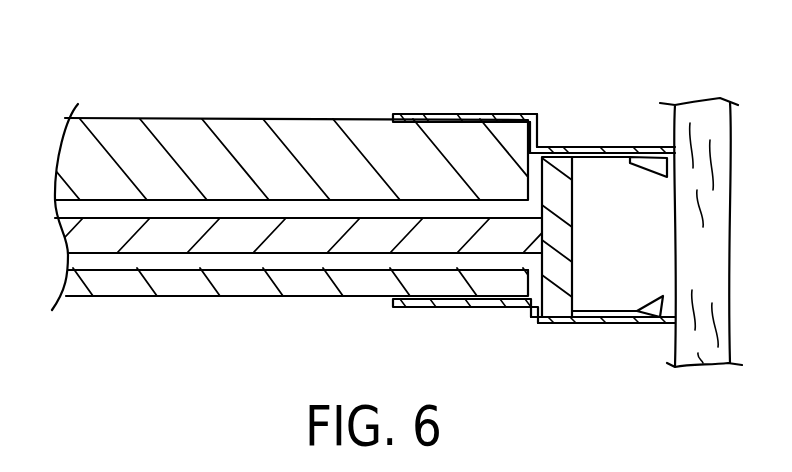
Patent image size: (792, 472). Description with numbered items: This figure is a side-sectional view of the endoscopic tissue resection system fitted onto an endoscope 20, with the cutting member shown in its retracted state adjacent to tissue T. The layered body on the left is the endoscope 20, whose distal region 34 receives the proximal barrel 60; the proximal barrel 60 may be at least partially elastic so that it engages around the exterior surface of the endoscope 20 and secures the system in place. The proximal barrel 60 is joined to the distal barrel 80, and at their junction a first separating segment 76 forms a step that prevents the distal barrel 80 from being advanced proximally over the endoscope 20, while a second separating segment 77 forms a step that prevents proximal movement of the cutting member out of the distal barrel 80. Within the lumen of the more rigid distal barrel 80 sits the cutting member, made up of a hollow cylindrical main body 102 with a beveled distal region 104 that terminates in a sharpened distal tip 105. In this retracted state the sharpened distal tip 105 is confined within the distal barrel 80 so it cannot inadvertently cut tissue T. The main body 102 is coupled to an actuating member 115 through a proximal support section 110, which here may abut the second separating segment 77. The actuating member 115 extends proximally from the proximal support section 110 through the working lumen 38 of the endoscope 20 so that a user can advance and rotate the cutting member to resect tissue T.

The endoscope 20 is at (183, 278).
The working lumen 38 is at (298, 262).
The distal region 34 is at (385, 283).
The actuating member 115 is at (445, 243).
The proximal barrel 60 is at (470, 114).
The first separating segment 76 is at (541, 132).
The distal barrel 80 is at (600, 146).
The sharpened distal tip 105 is at (663, 152).
The second separating segment 77 is at (537, 320).
The proximal support section 110 is at (558, 305).
The main body 102 is at (600, 318).
The beveled distal region 104 is at (650, 317).
The tissue T is at (701, 232).